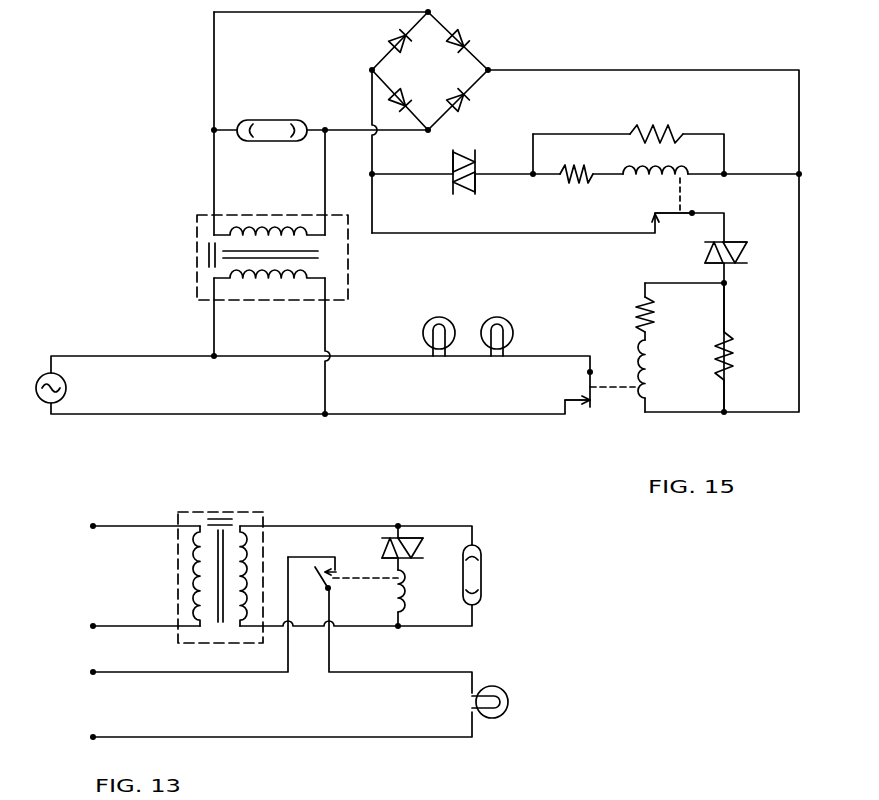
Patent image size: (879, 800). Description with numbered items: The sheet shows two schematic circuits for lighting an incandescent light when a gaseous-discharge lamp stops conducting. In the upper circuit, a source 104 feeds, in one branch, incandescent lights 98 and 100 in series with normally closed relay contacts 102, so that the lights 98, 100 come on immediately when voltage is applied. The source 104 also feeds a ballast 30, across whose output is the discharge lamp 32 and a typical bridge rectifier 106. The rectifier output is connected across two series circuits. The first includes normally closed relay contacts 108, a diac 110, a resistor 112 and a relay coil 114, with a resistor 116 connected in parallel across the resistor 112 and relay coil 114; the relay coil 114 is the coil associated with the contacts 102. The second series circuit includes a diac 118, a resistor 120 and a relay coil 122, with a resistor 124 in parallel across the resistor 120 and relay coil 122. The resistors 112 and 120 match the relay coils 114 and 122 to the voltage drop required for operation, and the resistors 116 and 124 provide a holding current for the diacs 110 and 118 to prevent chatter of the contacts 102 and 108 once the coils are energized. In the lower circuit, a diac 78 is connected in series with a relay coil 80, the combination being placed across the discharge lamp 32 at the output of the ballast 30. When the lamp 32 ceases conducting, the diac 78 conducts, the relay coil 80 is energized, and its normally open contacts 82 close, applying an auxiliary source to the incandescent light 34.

In FIG. 15, the ballast 30 is at (197, 265).
In FIG. 13, the ballast 30 is at (178, 581).
In FIG. 15, the discharge lamp 32 is at (257, 121).
In FIG. 13, the discharge lamp 32 is at (483, 580).
In FIG. 13, the incandescent light 34 is at (492, 719).
In FIG. 13, the diac 78 is at (413, 537).
In FIG. 13, the relay coil 80 is at (410, 599).
In FIG. 13, the relay contacts 82 is at (346, 589).
In FIG. 15, the incandescent light 98 is at (440, 317).
In FIG. 15, the incandescent light 100 is at (497, 317).
In FIG. 15, the relay contacts 102 is at (589, 408).
In FIG. 15, the source 104 is at (66, 389).
In FIG. 15, the bridge rectifier 106 is at (486, 27).
In FIG. 15, the relay contacts 108 is at (639, 221).
In FIG. 15, the diac 110 is at (740, 243).
In FIG. 15, the resistor 112 is at (656, 309).
In FIG. 15, the relay coil 114 is at (650, 386).
In FIG. 15, the resistor 116 is at (736, 352).
In FIG. 15, the diac 118 is at (477, 150).
In FIG. 15, the resistor 120 is at (561, 179).
In FIG. 15, the relay coil 122 is at (687, 181).
In FIG. 15, the resistor 124 is at (679, 128).